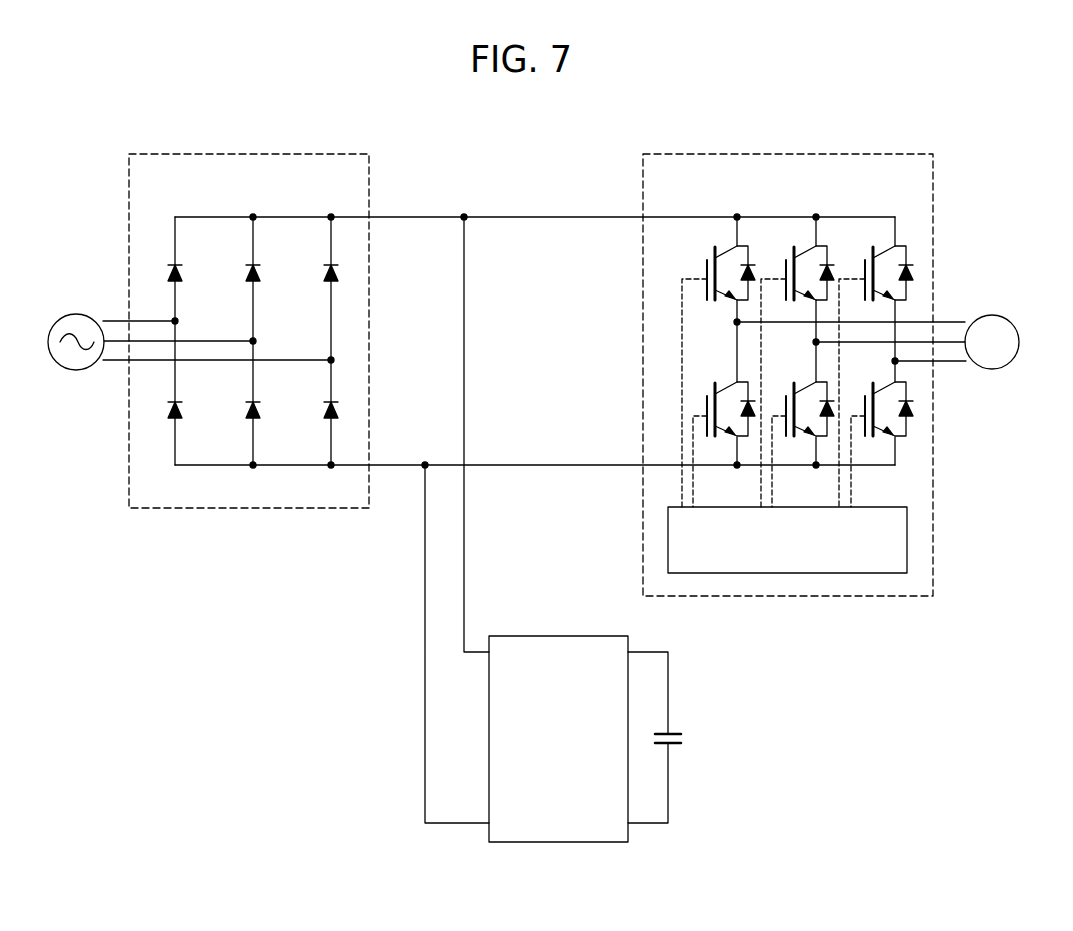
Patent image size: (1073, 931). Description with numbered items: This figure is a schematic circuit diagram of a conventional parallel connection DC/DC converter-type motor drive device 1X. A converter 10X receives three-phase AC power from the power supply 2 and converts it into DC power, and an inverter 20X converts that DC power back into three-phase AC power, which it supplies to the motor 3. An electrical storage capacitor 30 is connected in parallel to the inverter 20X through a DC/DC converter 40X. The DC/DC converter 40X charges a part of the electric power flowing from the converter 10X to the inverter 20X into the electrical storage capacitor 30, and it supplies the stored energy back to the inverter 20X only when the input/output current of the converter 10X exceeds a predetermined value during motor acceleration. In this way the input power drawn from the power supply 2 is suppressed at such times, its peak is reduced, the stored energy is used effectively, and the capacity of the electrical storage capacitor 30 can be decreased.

The motor drive device 1X is at (939, 100).
The converter 10X is at (283, 153).
The inverter 20X is at (845, 153).
The DC/DC converter 40X is at (541, 636).
The electrical storage capacitor 30 is at (672, 734).
The power supply 2 is at (70, 316).
The motor 3 is at (990, 317).